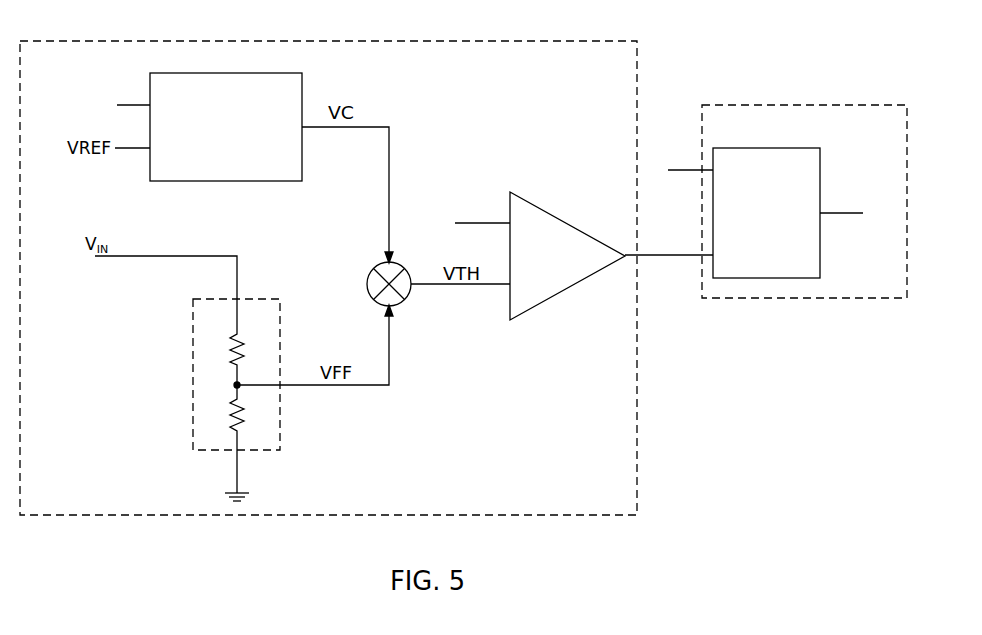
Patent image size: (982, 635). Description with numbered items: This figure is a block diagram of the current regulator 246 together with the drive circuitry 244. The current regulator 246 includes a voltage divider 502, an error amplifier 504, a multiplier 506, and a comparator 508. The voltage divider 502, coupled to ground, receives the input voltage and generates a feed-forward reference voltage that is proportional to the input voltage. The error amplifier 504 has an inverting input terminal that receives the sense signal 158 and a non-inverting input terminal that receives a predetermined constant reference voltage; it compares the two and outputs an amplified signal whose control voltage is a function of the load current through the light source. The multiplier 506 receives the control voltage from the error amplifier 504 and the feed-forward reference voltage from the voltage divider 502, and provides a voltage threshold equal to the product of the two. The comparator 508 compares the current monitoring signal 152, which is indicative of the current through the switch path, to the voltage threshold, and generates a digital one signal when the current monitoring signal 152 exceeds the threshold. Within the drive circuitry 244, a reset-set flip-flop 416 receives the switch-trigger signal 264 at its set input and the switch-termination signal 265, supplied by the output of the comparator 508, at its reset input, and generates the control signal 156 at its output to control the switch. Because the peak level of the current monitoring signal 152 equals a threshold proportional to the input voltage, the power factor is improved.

The current regulator 246 is at (107, 41).
The drive circuitry 244 is at (787, 105).
The error amplifier 504 is at (214, 161).
The sense signal 158 is at (135, 105).
The multiplier 506 is at (374, 271).
The comparator 508 is at (535, 206).
The current monitoring signal 152 is at (473, 223).
The voltage divider 502 is at (194, 386).
The switch-trigger signal 264 is at (690, 170).
The switch-termination signal 265 is at (690, 255).
The flip-flop 416 is at (812, 148).
The control signal 156 is at (841, 213).